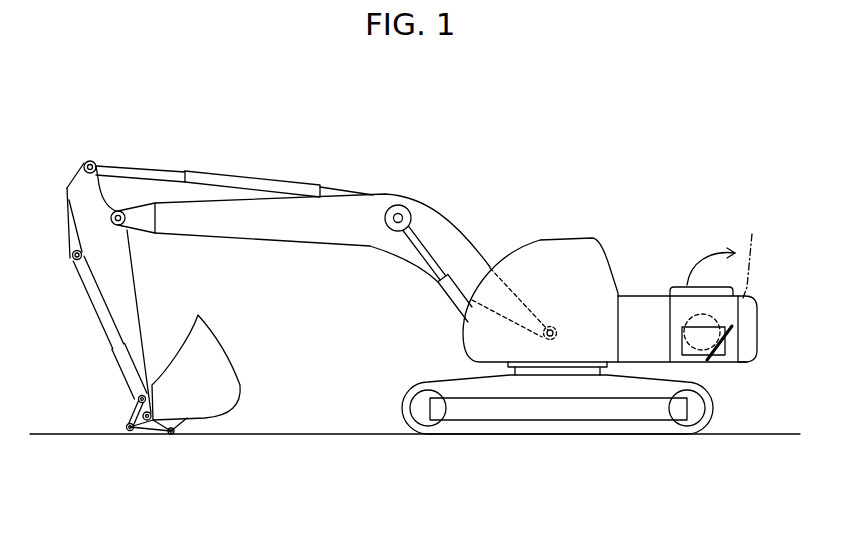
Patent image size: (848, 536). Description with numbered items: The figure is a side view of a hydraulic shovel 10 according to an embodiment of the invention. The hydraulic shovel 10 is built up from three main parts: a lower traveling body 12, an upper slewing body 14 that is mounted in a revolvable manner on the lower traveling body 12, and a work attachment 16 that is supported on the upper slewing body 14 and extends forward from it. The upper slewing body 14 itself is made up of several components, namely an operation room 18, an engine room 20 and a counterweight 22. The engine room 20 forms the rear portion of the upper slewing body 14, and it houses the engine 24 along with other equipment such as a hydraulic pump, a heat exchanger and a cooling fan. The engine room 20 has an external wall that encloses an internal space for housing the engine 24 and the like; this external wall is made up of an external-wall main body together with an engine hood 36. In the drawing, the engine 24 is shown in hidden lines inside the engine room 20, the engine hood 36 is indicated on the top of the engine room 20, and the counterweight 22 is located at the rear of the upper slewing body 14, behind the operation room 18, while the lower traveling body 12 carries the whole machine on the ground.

The hydraulic shovel 10 is at (629, 124).
The lower traveling body 12 is at (533, 436).
The upper slewing body 14 is at (527, 213).
The work attachment 16 is at (377, 175).
The operation room 18 is at (563, 238).
The engine room 20 is at (730, 308).
The counterweight 22 is at (733, 345).
The engine 24 is at (680, 323).
The engine hood 36 is at (710, 283).